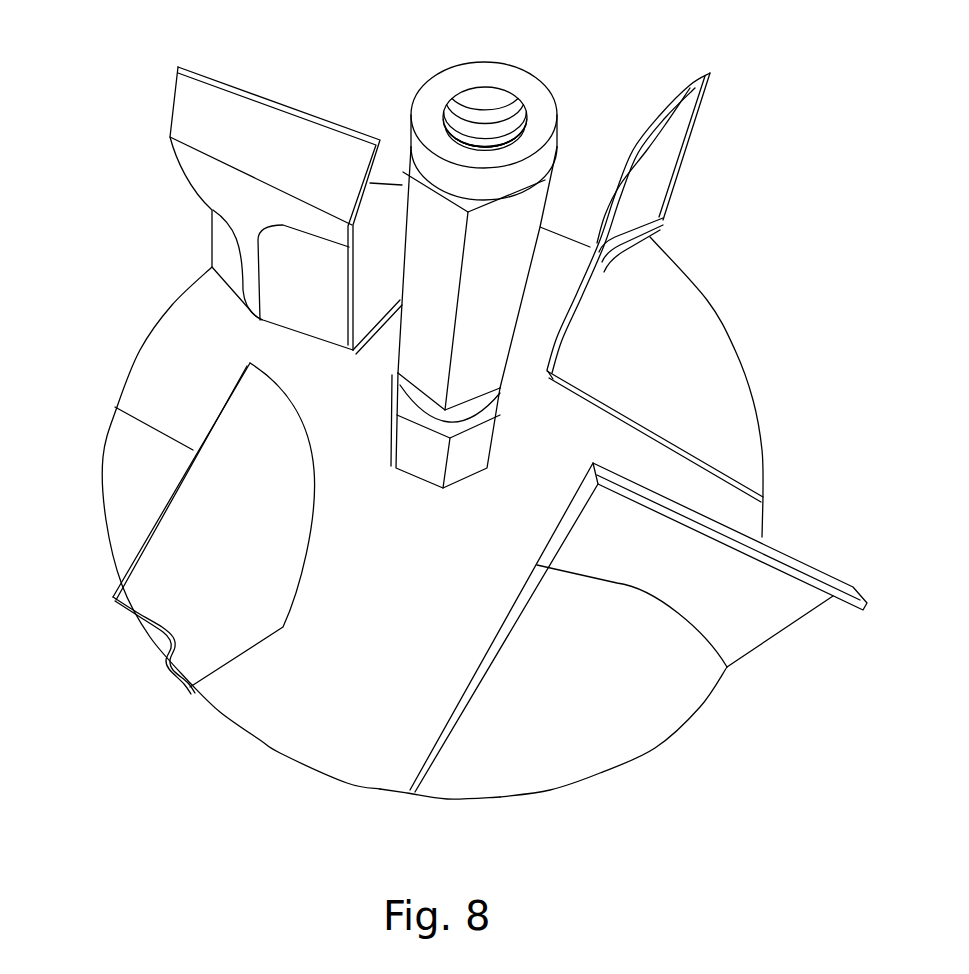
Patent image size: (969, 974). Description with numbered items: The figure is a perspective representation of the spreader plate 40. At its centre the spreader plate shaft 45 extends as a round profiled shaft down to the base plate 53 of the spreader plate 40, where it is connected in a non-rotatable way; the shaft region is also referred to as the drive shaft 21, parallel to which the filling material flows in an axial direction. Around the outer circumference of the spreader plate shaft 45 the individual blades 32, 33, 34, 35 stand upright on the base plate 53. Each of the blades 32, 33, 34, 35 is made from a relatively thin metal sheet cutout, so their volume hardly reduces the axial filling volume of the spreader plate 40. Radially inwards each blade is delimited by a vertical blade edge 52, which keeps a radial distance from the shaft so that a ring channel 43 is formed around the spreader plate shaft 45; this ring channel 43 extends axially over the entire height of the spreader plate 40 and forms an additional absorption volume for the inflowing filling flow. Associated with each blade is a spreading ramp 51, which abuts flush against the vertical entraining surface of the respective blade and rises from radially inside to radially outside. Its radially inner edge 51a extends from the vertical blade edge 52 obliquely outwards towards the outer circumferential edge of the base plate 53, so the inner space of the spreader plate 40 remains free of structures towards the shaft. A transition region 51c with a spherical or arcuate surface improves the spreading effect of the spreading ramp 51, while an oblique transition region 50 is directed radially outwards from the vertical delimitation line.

The drive shaft 21 is at (520, 215).
The blade 32 is at (710, 112).
The blade 33 is at (791, 625).
The blade 34 is at (171, 587).
The blade 35 is at (203, 122).
The spreader plate 40 is at (115, 334).
The ring channel 43 is at (372, 495).
The spreader plate shaft 45 is at (230, 252).
The transition region 50 is at (678, 688).
The spreading ramp 51 is at (377, 233).
The edge of spreading ramp 51a is at (462, 672).
The transition region of spreading ramp 51c is at (617, 583).
The vertical blade edge 52 is at (567, 497).
The base plate 53 is at (257, 727).